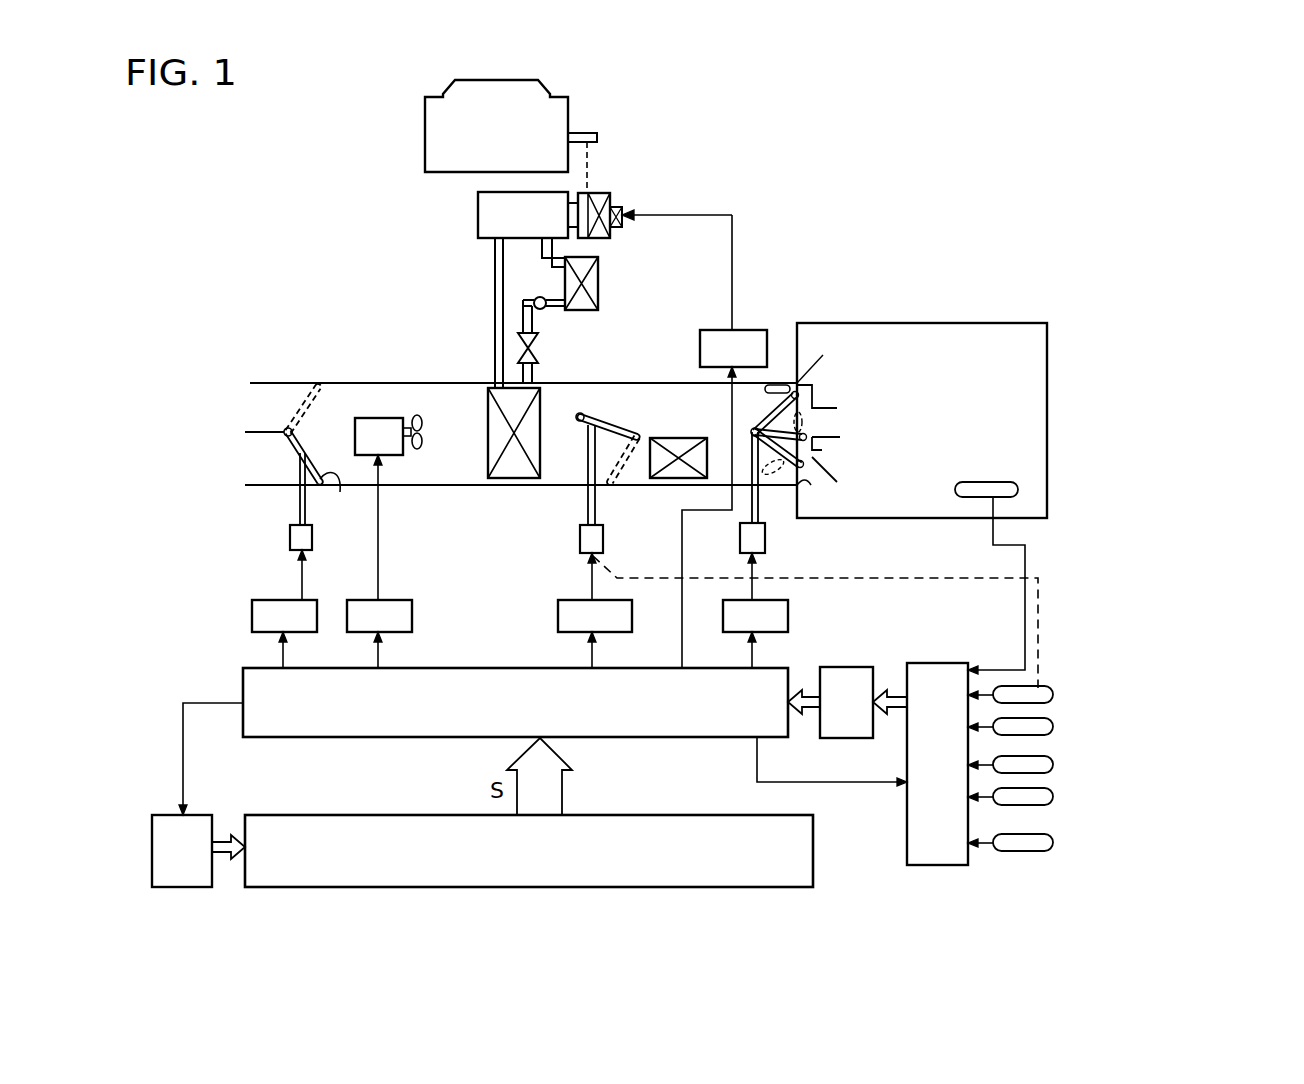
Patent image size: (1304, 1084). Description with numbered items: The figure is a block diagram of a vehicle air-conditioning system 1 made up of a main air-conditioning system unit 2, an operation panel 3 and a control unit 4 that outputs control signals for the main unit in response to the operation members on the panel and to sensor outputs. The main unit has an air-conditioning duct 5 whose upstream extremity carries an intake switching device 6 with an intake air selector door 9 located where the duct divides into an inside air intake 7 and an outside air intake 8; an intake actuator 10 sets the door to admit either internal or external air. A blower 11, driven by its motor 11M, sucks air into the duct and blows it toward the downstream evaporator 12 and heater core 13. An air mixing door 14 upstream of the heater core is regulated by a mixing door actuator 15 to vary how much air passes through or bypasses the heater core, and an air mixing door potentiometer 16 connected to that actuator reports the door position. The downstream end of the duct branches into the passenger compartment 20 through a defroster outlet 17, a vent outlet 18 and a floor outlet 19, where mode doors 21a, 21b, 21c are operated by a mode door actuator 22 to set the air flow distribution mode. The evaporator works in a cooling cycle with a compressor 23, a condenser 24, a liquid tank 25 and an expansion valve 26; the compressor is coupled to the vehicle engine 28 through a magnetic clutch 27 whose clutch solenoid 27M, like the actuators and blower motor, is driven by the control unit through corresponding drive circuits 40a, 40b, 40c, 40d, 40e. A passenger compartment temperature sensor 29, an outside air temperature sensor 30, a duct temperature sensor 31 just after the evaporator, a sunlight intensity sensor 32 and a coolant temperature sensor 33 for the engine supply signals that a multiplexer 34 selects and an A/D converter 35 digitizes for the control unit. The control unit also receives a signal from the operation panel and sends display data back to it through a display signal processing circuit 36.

The vehicle air-conditioning system 1 is at (735, 177).
The main air-conditioning system unit 2 is at (805, 273).
The operation panel 3 is at (553, 887).
The control unit 4 is at (650, 737).
The air-conditioning duct 5 is at (410, 383).
The intake switching device 6 is at (280, 405).
The inside air intake 7 is at (270, 408).
The outside air intake 8 is at (272, 464).
The intake air selector door 9 is at (323, 489).
The intake actuator 10 is at (290, 537).
The blower 11 is at (371, 415).
The motor 11M is at (392, 447).
The evaporator 12 is at (516, 468).
The heater core 13 is at (675, 472).
The air mixing door 14 is at (613, 420).
The mixing door actuator 15 is at (603, 541).
The air mixing door potentiometer 16 is at (1053, 695).
The defroster outlet 17 is at (820, 365).
The vent outlet 18 is at (810, 425).
The floor outlet 19 is at (820, 487).
The passenger compartment 20 is at (892, 324).
The mode door 21a is at (812, 385).
The mode door 21b is at (812, 445).
The mode door 21c is at (810, 470).
The mode door actuator 22 is at (765, 547).
The compressor 23 is at (478, 226).
The condenser 24 is at (598, 272).
The liquid tank 25 is at (546, 312).
The expansion valve 26 is at (538, 347).
The magnetic clutch 27 is at (600, 192).
The clutch solenoid 27M is at (628, 207).
The vehicle engine 28 is at (425, 146).
The passenger compartment temperature sensor 29 is at (983, 482).
The outside air temperature sensor 30 is at (1053, 727).
The duct temperature sensor 31 is at (1053, 765).
The sunlight intensity sensor 32 is at (1053, 797).
The coolant temperature sensor 33 is at (1053, 843).
The multiplexer 34 is at (938, 670).
The A/D converter 35 is at (847, 672).
The display signal processing circuit 36 is at (185, 878).
The drive circuit 40a is at (272, 608).
The drive circuit 40b is at (577, 607).
The drive circuit 40c is at (780, 613).
The drive circuit 40d is at (400, 607).
The drive circuit 40e is at (714, 330).